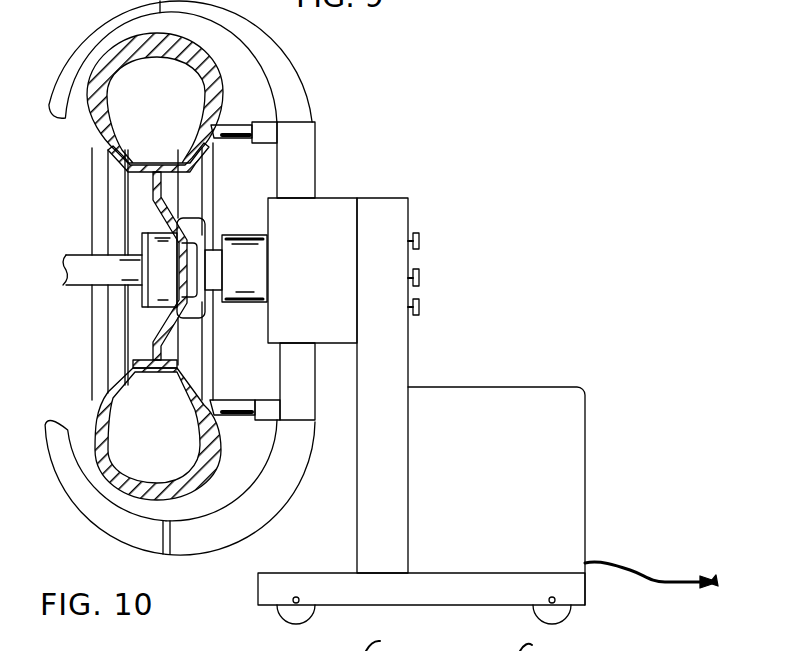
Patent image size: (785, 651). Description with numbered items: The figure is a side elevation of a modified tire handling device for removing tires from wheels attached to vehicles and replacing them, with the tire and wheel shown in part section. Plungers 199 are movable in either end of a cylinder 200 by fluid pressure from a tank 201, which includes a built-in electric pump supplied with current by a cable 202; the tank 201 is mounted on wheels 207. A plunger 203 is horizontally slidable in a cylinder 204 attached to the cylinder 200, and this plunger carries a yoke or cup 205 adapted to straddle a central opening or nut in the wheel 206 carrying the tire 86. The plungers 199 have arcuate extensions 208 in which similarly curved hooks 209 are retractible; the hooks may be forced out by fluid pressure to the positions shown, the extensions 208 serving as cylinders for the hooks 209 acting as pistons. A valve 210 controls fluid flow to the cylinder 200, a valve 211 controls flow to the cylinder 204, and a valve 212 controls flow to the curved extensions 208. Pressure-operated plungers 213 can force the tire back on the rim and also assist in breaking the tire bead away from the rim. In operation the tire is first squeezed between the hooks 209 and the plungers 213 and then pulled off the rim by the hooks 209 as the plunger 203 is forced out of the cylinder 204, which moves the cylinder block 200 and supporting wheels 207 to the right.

The tire 86 is at (115, 450).
The plungers 199 is at (315, 160).
The cylinder 200 is at (342, 208).
The tank 201 is at (587, 413).
The cable 202 is at (625, 570).
The plunger 203 is at (212, 252).
The cylinder 204 is at (243, 302).
The yoke or cup 205 is at (193, 220).
The wheel 206 is at (153, 190).
The wheels 207 is at (307, 617).
The arcuate extensions 208 is at (309, 87).
The hooks 209 is at (92, 12).
The valve 210 is at (420, 242).
The valve 211 is at (420, 280).
The valve 212 is at (420, 310).
The pressure-operated plungers 213 is at (235, 400).